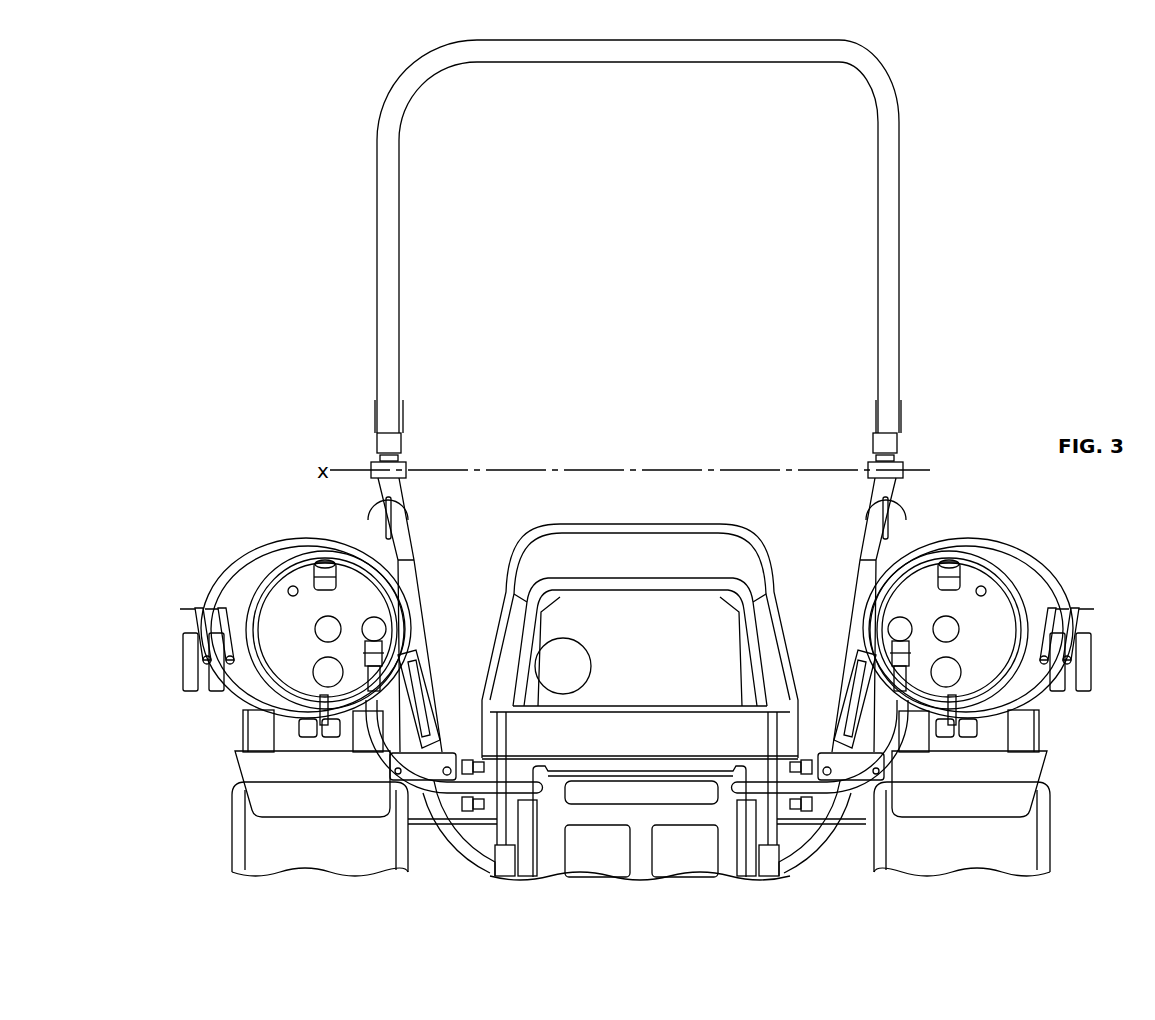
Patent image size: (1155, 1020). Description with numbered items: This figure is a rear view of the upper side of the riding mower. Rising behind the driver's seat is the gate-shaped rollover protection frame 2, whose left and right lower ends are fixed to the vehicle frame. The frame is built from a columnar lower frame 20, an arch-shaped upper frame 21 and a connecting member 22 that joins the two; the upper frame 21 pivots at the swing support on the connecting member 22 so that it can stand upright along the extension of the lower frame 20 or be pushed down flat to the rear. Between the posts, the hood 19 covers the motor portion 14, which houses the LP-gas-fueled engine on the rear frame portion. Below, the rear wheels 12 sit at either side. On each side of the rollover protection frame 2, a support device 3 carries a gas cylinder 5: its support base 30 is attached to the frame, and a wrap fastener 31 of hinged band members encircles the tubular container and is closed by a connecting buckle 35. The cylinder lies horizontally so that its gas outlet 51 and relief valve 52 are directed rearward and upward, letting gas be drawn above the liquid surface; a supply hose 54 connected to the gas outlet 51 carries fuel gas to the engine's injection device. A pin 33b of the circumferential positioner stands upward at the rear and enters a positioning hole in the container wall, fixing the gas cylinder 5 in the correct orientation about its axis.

The rollover protection frame 2 is at (368, 184).
The upper frame 21 is at (878, 222).
The connecting member 22 is at (401, 444).
The lower frame 20 is at (402, 548).
The motor portion 14 is at (520, 517).
The hood 19 is at (700, 546).
The gas cylinder 5 is at (222, 590).
The wrap fastener 31 is at (226, 578).
The connecting buckle 35 is at (188, 676).
The gas outlet 51 is at (384, 627).
The relief valve 52 is at (335, 578).
The support device 3 is at (236, 735).
The support base 30 is at (236, 755).
The pin 33b is at (318, 714).
The supply hose 54 is at (378, 742).
The rear wheels 12 is at (236, 826).